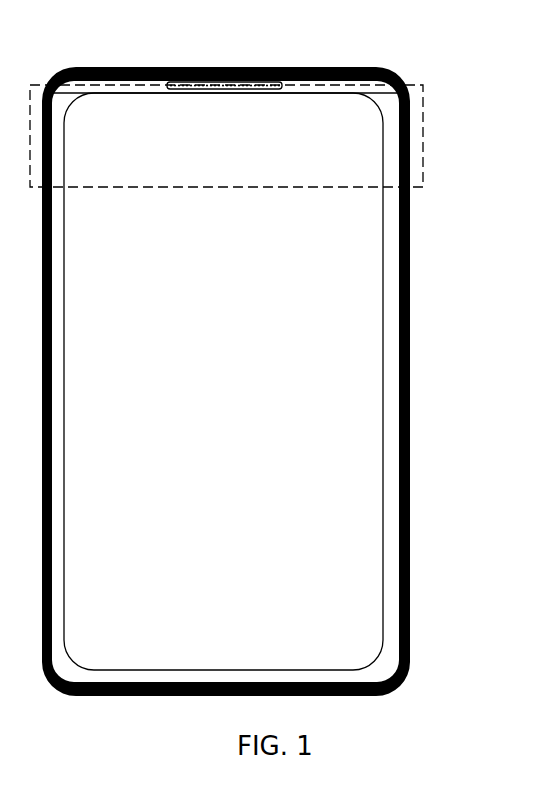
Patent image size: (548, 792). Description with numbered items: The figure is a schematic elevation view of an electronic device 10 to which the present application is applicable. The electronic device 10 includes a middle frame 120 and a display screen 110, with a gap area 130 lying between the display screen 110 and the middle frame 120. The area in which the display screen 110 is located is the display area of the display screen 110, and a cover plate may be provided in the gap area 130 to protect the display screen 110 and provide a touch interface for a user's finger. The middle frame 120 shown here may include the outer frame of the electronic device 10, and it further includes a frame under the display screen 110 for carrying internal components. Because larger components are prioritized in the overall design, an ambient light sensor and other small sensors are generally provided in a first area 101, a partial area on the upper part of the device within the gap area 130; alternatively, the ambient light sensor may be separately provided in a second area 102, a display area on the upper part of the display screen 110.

The electronic device 10 is at (92, 33).
The first area 101 is at (423, 85).
The second area 102 is at (423, 141).
The display screen 110 is at (360, 340).
The middle frame 120 is at (410, 380).
The gap area 130 is at (390, 282).